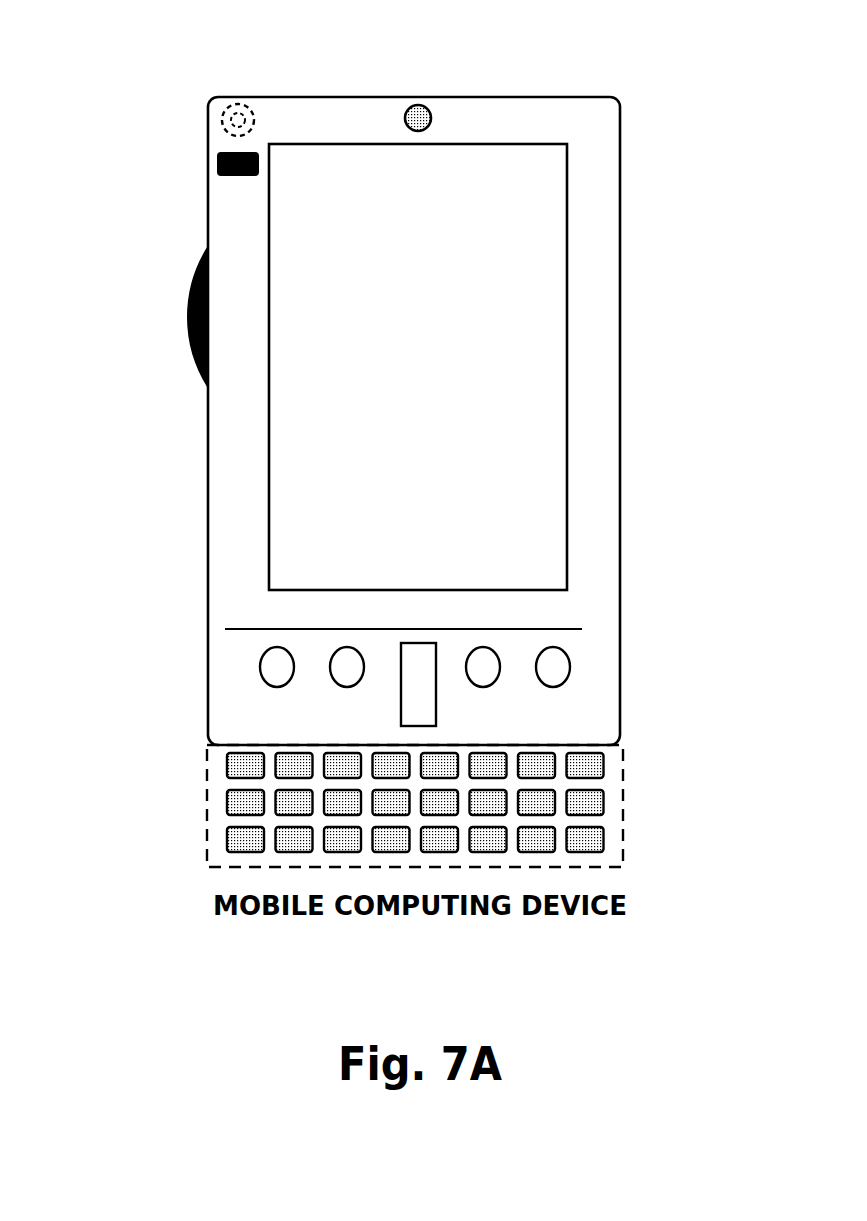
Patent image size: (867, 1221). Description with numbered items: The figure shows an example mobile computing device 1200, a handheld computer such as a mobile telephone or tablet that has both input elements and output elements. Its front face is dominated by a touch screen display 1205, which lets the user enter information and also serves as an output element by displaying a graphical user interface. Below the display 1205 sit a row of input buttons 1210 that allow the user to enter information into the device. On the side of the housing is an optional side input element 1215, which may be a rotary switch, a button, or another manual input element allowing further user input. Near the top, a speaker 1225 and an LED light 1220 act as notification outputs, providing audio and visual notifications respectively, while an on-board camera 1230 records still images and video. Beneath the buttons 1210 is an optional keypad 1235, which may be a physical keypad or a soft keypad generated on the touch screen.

The mobile computing device 1200 is at (620, 112).
The touch screen display 1205 is at (295, 527).
The input buttons 1210 is at (558, 678).
The side input element 1215 is at (188, 322).
The LED light 1220 is at (225, 155).
The speaker 1225 is at (225, 112).
The on-board camera 1230 is at (428, 115).
The keypad 1235 is at (207, 835).